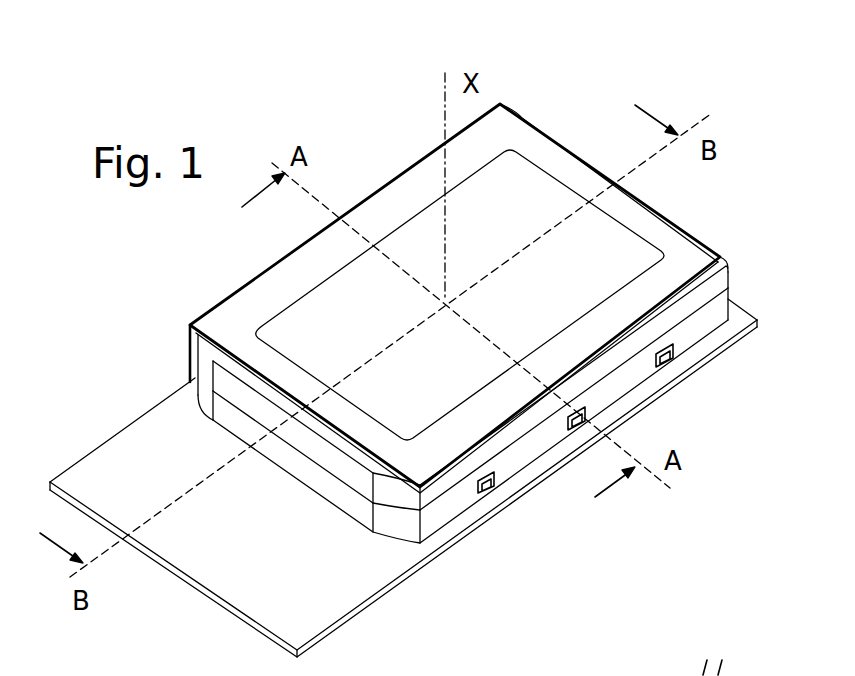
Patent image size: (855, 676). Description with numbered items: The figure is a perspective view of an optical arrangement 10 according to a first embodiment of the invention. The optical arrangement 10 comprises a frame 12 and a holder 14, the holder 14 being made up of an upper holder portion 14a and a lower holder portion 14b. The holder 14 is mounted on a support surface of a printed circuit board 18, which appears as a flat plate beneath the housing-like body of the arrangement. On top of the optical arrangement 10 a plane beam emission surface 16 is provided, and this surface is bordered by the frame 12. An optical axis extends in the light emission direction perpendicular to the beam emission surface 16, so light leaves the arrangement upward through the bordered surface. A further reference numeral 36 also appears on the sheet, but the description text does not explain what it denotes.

The optical arrangement 10 is at (275, 88).
The frame 12 is at (238, 315).
The holder 14 is at (63, 287).
The upper holder portion 14a is at (230, 383).
The lower holder portion 14b is at (227, 417).
The beam emission surface 16 is at (588, 267).
The printed circuit board 18 is at (380, 590).
The marking 36 is at (708, 648).